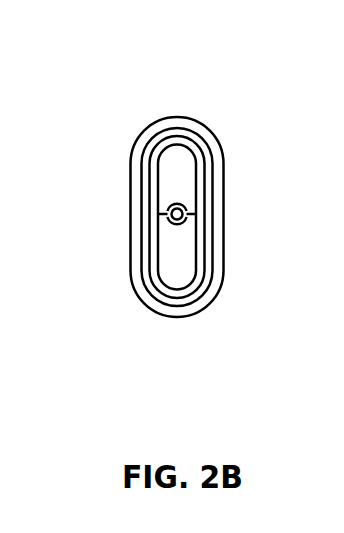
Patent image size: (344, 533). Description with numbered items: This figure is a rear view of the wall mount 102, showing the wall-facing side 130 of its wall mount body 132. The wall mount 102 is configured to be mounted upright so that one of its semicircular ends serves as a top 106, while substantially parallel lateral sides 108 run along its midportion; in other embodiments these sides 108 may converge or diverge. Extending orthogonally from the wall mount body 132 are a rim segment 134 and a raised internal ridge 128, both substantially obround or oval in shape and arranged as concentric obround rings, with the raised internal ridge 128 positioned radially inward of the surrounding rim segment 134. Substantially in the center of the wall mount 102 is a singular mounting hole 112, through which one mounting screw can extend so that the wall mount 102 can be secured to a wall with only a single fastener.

The wall mount 102 is at (102, 48).
The top 106 is at (173, 117).
The lateral sides 108 is at (130, 218).
The mounting hole 112 is at (185, 205).
The raised internal ridge 128 is at (197, 201).
The wall-facing side 130 is at (140, 297).
The wall mount body 132 is at (205, 280).
The rim segment 134 is at (214, 222).